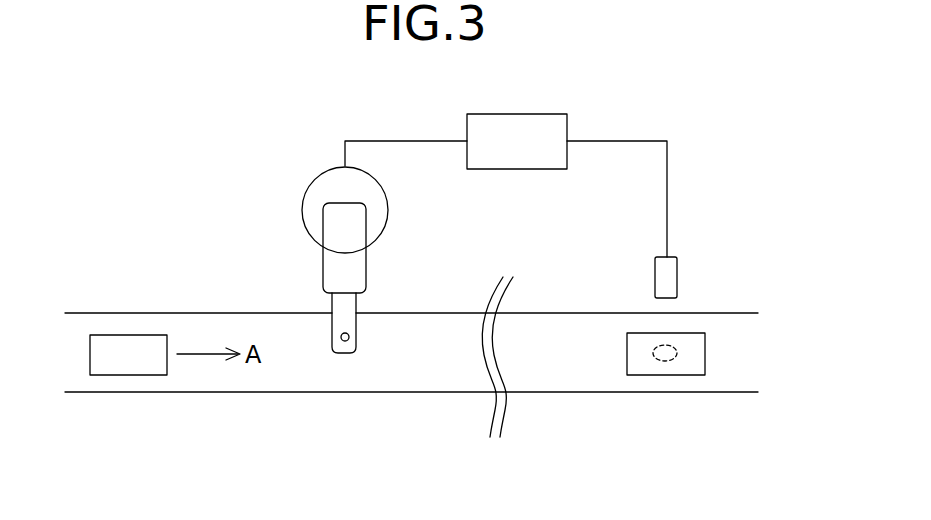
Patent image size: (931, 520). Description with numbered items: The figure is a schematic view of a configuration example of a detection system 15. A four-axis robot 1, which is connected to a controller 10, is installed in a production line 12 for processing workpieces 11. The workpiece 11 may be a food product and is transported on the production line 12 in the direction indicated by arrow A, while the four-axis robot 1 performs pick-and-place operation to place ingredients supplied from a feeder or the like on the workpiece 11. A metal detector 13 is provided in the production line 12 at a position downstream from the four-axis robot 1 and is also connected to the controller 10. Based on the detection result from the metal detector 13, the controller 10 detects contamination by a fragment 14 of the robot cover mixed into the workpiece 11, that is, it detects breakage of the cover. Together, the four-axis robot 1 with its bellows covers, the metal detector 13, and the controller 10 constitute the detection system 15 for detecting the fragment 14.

The four-axis robot 1 is at (303, 196).
The controller 10 is at (568, 129).
The workpiece 11 is at (122, 375).
The production line 12 is at (117, 313).
The metal detector 13 is at (677, 270).
The fragment 14 is at (675, 357).
The detection system 15 is at (296, 133).